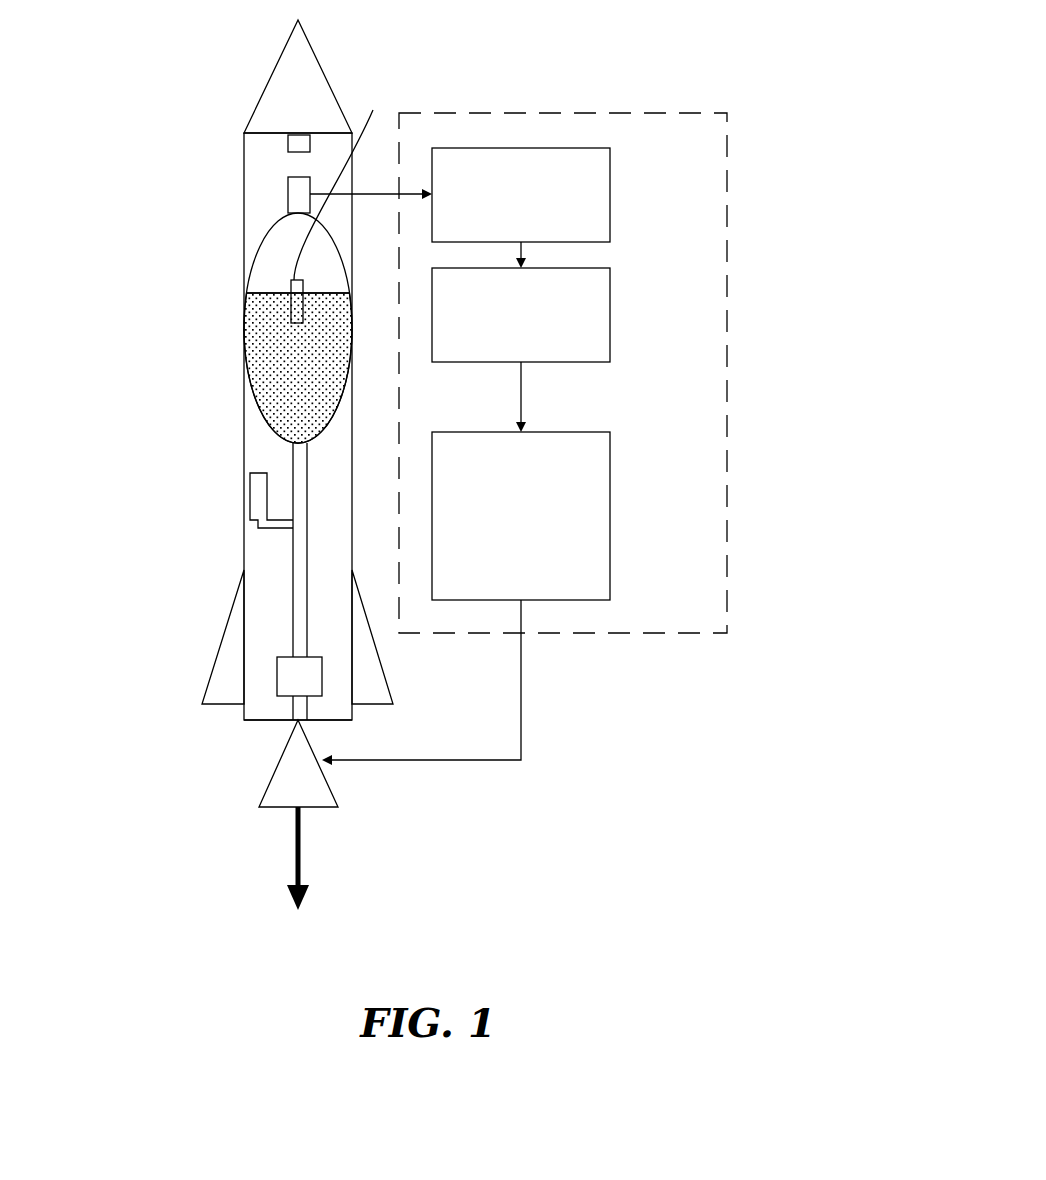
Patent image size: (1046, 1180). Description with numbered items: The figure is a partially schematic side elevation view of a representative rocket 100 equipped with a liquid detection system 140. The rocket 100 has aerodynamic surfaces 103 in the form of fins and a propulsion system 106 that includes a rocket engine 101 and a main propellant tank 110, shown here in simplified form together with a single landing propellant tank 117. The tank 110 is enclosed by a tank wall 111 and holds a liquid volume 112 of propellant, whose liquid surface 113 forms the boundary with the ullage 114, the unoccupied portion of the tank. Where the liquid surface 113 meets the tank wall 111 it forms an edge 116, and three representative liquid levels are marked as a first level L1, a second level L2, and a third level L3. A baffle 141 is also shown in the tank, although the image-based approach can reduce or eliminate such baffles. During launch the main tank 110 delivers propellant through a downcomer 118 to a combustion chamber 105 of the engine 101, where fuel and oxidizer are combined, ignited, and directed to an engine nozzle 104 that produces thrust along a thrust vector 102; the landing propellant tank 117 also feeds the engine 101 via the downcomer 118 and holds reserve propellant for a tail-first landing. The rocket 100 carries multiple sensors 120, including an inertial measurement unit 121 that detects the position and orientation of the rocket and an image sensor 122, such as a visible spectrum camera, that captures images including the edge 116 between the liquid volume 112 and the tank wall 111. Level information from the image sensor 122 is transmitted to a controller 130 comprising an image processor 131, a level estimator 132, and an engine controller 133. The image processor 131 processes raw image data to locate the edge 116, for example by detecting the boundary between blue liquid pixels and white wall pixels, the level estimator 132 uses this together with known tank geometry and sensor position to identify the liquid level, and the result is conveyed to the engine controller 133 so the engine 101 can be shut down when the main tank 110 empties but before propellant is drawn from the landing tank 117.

The rocket 100 is at (135, 241).
The rocket engine 101 is at (250, 738).
The thrust vector 102 is at (295, 850).
The aerodynamic surfaces 103 is at (180, 638).
The engine nozzle 104 is at (270, 778).
The combustion chamber 105 is at (322, 678).
The propulsion system 106 is at (385, 726).
The tank 110 is at (267, 269).
The tank wall 111 is at (244, 331).
The liquid volume 112 is at (318, 343).
The liquid surface 113 is at (318, 290).
The ullage 114 is at (318, 248).
The edge 116 is at (258, 290).
The landing propellant tank 117 is at (250, 488).
The downcomer 118 is at (307, 612).
The sensors 120 is at (163, 99).
The inertial measurement unit 121 is at (288, 140).
The image sensor 122 is at (288, 182).
The controller 130 is at (685, 113).
The image processor 131 is at (610, 194).
The level estimator 132 is at (610, 314).
The engine controller 133 is at (610, 477).
The liquid detection system 140 is at (790, 95).
The baffle 141 is at (344, 183).
The first level L1 is at (236, 293).
The second level L2 is at (260, 427).
The third level L3 is at (285, 443).